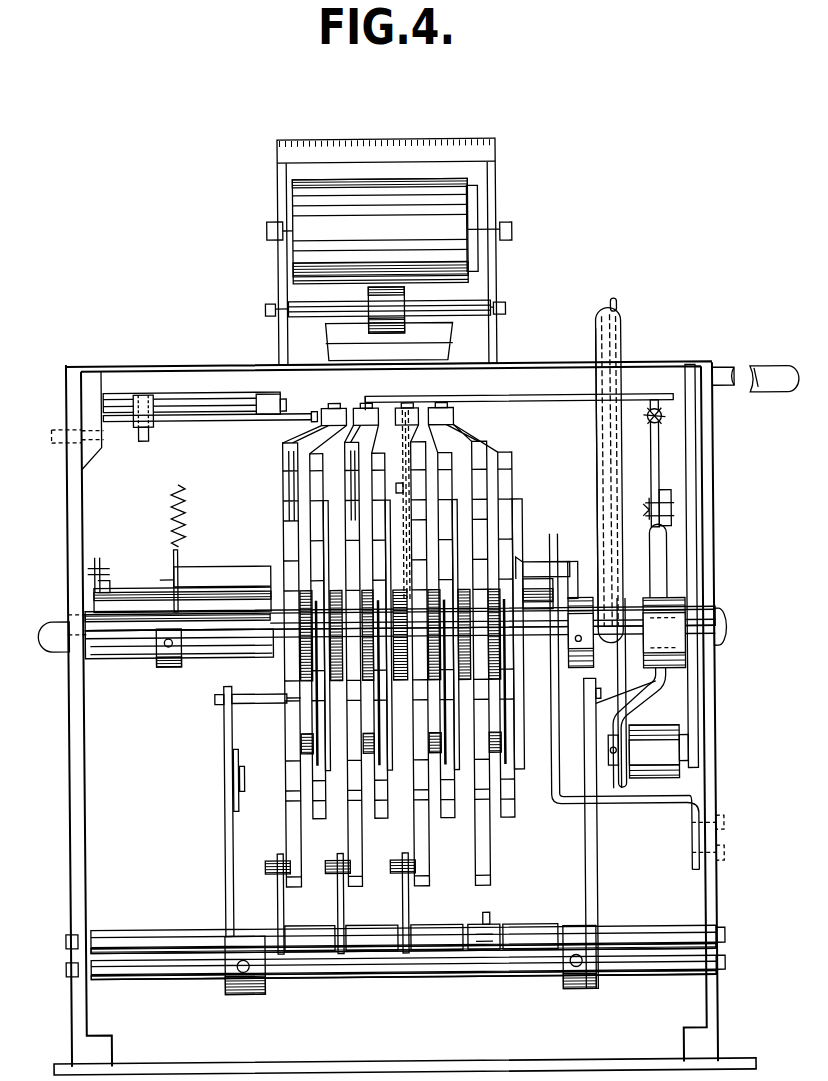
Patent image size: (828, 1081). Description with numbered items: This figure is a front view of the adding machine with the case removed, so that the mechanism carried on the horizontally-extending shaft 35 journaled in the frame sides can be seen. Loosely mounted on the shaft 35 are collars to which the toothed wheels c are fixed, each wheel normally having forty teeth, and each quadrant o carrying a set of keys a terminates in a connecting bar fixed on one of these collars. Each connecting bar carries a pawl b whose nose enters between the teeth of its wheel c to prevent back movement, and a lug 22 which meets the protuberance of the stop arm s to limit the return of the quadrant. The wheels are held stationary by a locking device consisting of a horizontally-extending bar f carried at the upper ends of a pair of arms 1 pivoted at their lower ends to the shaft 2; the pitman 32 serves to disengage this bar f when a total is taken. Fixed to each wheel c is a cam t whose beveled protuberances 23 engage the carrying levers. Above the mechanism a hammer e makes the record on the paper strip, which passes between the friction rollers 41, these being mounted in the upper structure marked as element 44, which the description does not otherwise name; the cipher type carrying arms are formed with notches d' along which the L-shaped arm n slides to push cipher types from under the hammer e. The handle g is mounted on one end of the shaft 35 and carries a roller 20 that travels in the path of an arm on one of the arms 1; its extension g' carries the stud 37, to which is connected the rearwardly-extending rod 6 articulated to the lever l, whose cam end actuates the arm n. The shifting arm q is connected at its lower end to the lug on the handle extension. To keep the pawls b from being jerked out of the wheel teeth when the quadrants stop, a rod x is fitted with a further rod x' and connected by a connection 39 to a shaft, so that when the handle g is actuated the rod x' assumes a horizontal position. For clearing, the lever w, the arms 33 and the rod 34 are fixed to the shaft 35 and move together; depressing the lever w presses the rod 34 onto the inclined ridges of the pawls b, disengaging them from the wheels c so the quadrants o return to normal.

The platen roller frame 44 is at (410, 138).
The friction rollers 41 is at (407, 293).
The hammer e is at (328, 343).
The L-shaped arm n is at (170, 416).
The lever l is at (648, 398).
The stud 37 is at (648, 515).
The rearwardly-extending rod 6 is at (662, 472).
The shifting arm q is at (620, 312).
The lever w is at (597, 337).
The handle g is at (745, 407).
The extension g' is at (720, 566).
The bar or rod x' is at (151, 549).
The rod 34 is at (200, 568).
The arms 33 is at (172, 580).
The connection 39 is at (90, 588).
The cam t is at (523, 546).
The bar or rod x is at (382, 703).
The shaft 35 is at (152, 666).
The keys a is at (284, 497).
The quadrant o is at (311, 515).
The toothed wheels c is at (346, 548).
The protuberances 23 is at (387, 500).
The notch d' is at (372, 428).
The arms 1 is at (222, 852).
The horizontally-extending bar f is at (262, 702).
The pawl b is at (285, 688).
The pitman 32 is at (243, 800).
The roller 20 is at (672, 782).
The shaft 2 is at (405, 965).
The stop arm s is at (410, 910).
The lug 22 is at (268, 874).